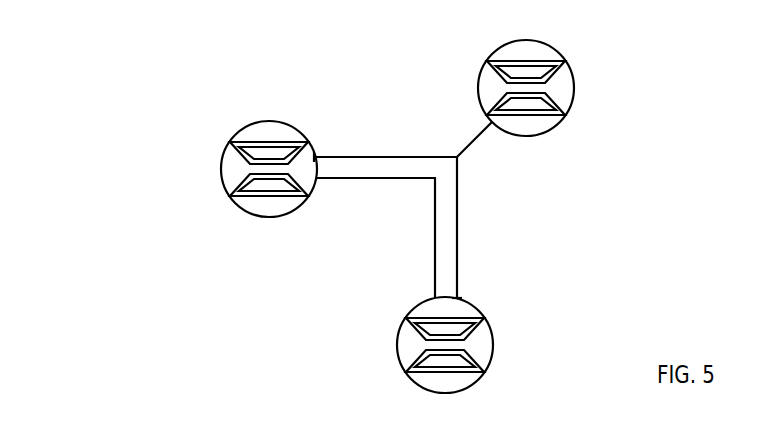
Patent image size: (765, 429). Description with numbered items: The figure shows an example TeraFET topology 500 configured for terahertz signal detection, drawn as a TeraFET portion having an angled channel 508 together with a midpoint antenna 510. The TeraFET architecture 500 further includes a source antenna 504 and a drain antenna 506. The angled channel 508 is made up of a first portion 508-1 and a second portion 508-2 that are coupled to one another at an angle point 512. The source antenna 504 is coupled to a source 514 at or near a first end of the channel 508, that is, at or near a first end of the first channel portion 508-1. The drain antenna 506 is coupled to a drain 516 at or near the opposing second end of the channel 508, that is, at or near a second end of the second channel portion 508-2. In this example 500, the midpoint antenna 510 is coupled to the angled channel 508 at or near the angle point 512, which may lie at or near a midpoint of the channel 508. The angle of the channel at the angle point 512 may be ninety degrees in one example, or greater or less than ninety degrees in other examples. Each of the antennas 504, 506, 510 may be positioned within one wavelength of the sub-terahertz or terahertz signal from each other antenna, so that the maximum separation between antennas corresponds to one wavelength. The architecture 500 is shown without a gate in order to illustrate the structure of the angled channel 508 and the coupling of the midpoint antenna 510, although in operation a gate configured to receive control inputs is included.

The TeraFET topology 500 is at (140, 70).
The source antenna 504 is at (224, 155).
The drain antenna 506 is at (487, 322).
The angled channel 508 is at (435, 207).
The first portion 508-1 is at (378, 168).
The second portion 508-2 is at (446, 245).
The midpoint antenna 510 is at (573, 78).
The angle point 512 is at (429, 193).
The source 514 is at (318, 147).
The drain 516 is at (462, 294).